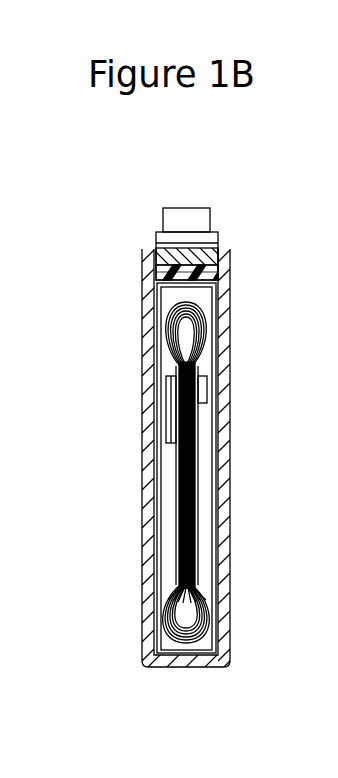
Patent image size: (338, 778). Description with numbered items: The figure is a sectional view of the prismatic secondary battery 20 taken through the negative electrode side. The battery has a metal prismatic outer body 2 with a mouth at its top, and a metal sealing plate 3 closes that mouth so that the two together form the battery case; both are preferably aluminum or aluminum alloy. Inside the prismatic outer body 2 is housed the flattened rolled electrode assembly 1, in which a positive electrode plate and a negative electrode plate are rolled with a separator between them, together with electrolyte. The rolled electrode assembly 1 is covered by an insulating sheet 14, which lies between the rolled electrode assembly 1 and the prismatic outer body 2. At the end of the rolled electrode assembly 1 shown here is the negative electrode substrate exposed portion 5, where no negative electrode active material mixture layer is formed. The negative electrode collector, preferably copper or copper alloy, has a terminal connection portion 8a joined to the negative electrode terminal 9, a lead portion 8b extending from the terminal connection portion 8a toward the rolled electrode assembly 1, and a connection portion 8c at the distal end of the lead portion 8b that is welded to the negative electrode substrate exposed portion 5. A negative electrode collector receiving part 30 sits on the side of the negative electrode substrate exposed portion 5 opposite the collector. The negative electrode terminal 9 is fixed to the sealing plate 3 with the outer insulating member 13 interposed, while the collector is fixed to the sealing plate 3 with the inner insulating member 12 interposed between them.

The prismatic secondary battery 20 is at (124, 130).
The negative electrode terminal 9 is at (191, 212).
The outer insulating member 13 is at (156, 244).
The sealing plate 3 is at (205, 258).
The inner insulating member 12 is at (220, 270).
The terminal connection portion 8a is at (220, 278).
The lead portion 8b is at (165, 312).
The insulating sheet 14 is at (216, 366).
The connection portion 8c is at (167, 398).
The negative electrode collector receiving part 30 is at (206, 392).
The rolled electrode assembly 1 is at (203, 477).
The prismatic outer body 2 is at (224, 516).
The negative electrode substrate exposed portion 5 is at (178, 571).